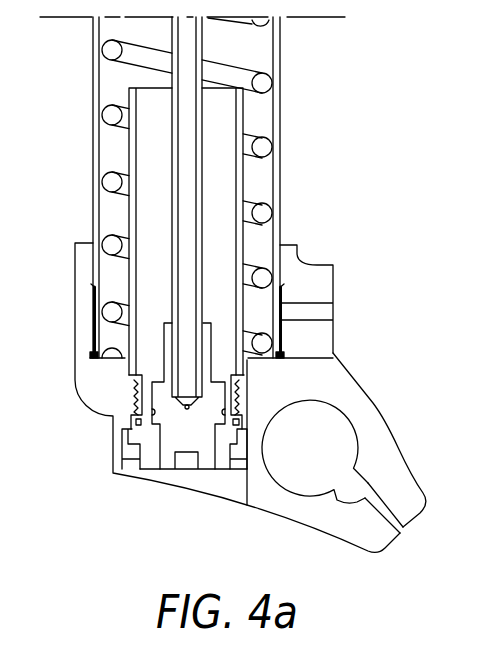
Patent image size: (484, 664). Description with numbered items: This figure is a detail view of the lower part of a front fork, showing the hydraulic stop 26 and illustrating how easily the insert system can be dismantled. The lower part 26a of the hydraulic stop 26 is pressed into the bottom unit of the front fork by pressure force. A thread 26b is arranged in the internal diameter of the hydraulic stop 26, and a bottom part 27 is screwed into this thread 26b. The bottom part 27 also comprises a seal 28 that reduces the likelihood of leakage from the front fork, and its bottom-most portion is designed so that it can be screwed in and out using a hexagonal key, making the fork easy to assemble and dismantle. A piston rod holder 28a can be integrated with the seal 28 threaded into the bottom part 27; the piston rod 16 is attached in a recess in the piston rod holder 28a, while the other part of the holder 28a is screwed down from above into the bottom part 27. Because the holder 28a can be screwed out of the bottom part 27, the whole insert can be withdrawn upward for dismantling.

The piston rod 16 is at (202, 121).
The hydraulic stop 26 is at (243, 183).
The lower part of the hydraulic stop 26a is at (244, 376).
The thread 26b is at (247, 400).
The bottom part 27 is at (225, 460).
The seal 28 is at (172, 447).
The piston rod holder 28a is at (208, 342).